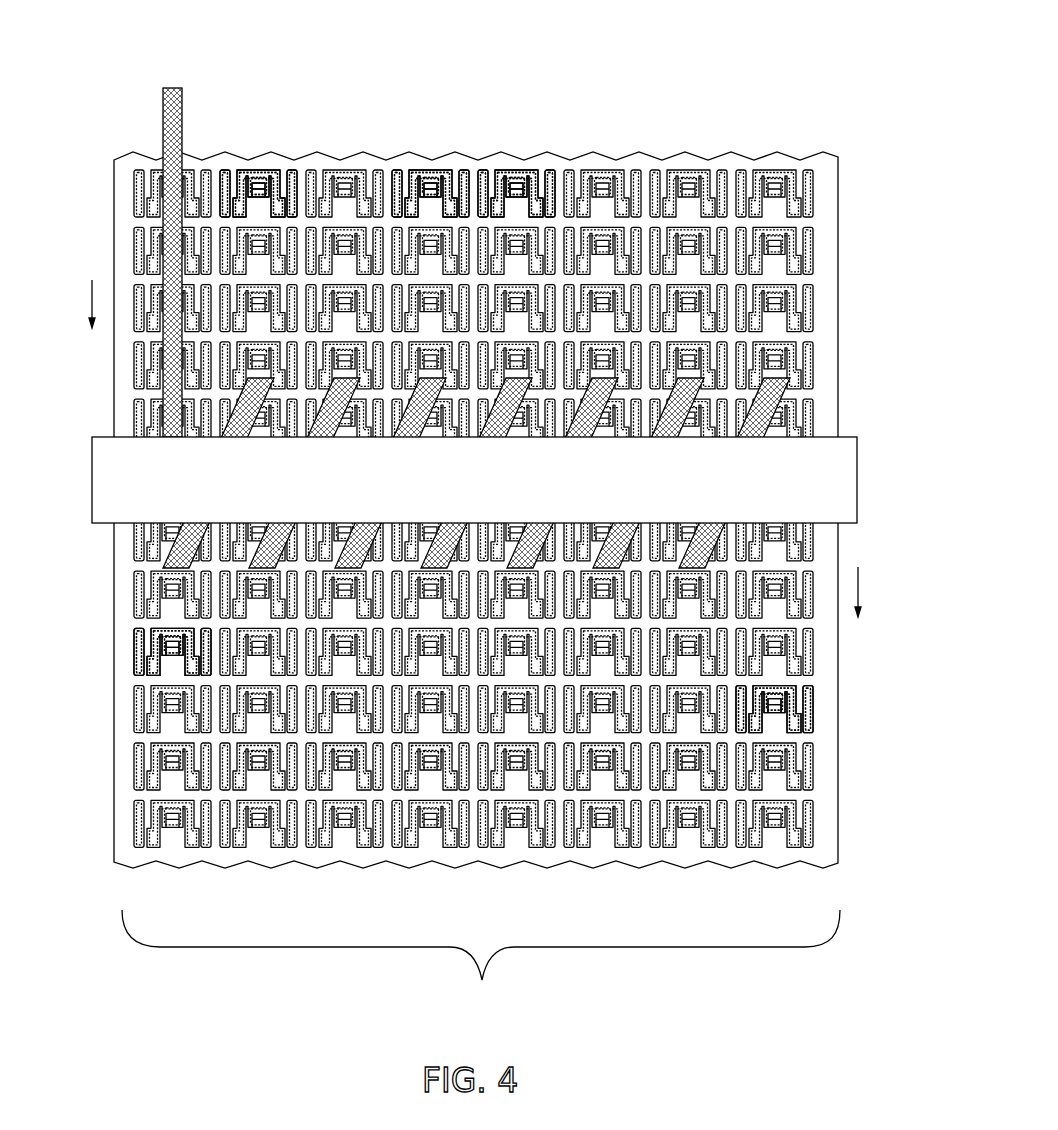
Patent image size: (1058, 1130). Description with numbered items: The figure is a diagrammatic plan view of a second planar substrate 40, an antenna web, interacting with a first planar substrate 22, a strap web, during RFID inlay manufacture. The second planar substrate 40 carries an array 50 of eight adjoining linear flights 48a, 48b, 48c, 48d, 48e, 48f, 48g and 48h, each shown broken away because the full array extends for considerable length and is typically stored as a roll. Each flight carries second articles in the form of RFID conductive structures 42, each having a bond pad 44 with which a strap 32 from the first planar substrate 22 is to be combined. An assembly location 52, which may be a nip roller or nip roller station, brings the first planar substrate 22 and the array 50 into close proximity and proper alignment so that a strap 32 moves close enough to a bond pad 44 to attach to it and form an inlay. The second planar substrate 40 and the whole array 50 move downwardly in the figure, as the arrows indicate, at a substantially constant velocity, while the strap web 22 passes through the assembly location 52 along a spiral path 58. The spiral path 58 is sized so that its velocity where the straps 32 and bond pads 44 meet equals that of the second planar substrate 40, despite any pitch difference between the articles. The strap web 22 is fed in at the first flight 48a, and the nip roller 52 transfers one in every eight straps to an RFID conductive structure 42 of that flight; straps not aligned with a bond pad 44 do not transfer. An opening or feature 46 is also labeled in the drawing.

The first planar substrate 22 is at (165, 77).
The strap 32 is at (170, 646).
The second planar substrate 40 is at (846, 157).
The RFID conductive structure 42 is at (443, 172).
The bond pad 44 is at (258, 183).
The opening 46 is at (514, 213).
The linear flight 48a is at (172, 846).
The linear flight 48b is at (258, 846).
The linear flight 48c is at (344, 846).
The linear flight 48d is at (430, 846).
The linear flight 48e is at (516, 846).
The linear flight 48f is at (602, 846).
The linear flight 48g is at (688, 846).
The linear flight 48h is at (774, 846).
The array 50 is at (481, 962).
The assembly location 52 is at (848, 451).
The spiral path 58 is at (197, 478).